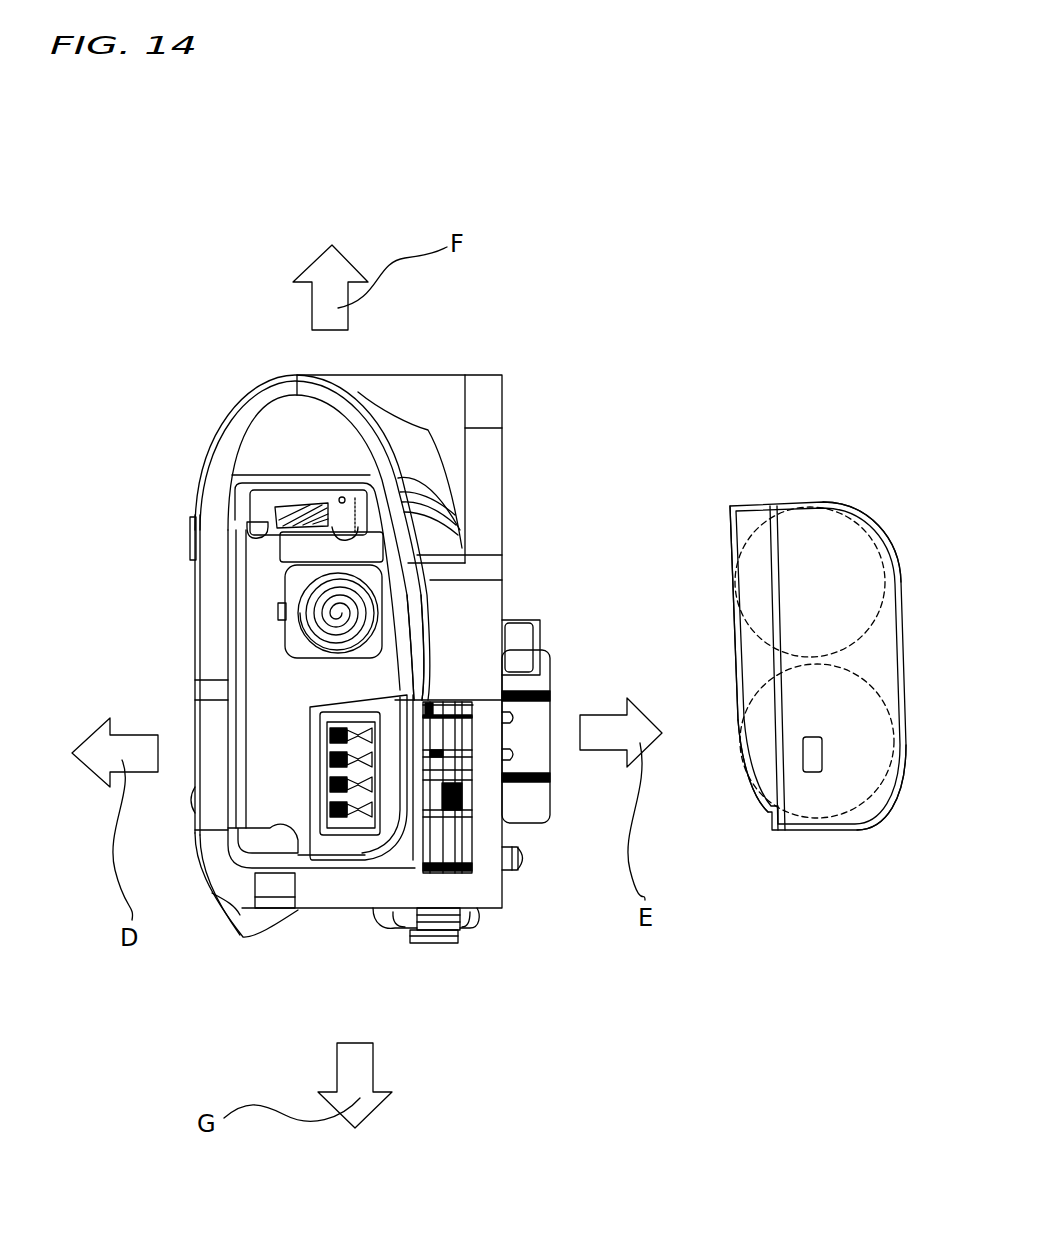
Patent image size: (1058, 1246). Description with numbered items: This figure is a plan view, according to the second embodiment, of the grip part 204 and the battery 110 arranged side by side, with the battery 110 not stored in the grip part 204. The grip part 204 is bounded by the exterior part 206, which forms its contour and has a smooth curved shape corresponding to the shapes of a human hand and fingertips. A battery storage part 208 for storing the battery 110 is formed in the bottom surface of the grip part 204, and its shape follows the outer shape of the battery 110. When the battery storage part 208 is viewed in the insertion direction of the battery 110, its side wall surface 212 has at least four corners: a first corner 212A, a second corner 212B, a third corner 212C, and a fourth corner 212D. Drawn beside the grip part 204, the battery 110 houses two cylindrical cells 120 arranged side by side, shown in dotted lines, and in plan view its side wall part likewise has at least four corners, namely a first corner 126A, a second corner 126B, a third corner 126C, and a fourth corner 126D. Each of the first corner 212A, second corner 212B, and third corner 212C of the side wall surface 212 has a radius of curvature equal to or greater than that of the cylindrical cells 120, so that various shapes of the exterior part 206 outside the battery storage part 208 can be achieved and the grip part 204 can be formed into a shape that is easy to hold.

The battery 110 is at (779, 452).
The cylindrical cells 120 is at (730, 560).
The first corner 126A is at (883, 807).
The second corner 126B is at (850, 503).
The third corner 126C is at (752, 797).
The fourth corner 126D is at (728, 505).
The grip part 204 is at (474, 347).
The exterior part 206 is at (238, 398).
The battery storage part 208 is at (445, 615).
The side wall surface 212 is at (270, 711).
The first corner 212A is at (368, 845).
The second corner 212B is at (324, 505).
The third corner 212C is at (283, 826).
The fourth corner 212D is at (267, 527).